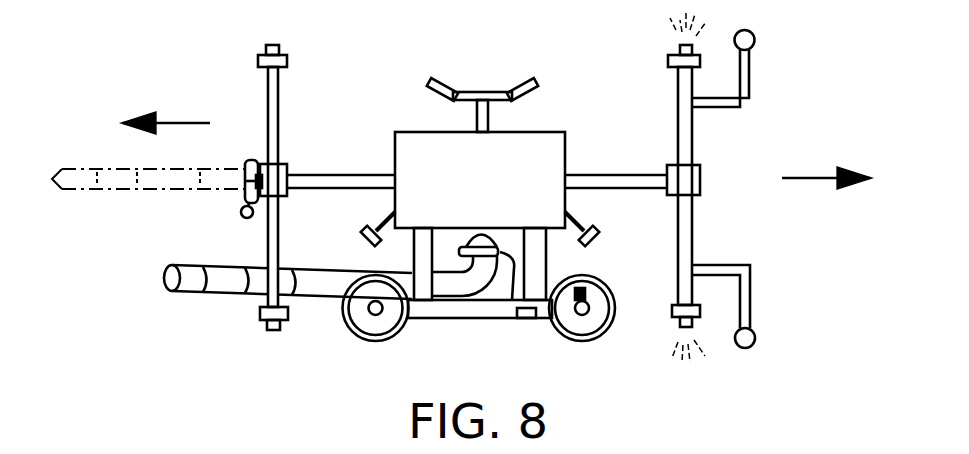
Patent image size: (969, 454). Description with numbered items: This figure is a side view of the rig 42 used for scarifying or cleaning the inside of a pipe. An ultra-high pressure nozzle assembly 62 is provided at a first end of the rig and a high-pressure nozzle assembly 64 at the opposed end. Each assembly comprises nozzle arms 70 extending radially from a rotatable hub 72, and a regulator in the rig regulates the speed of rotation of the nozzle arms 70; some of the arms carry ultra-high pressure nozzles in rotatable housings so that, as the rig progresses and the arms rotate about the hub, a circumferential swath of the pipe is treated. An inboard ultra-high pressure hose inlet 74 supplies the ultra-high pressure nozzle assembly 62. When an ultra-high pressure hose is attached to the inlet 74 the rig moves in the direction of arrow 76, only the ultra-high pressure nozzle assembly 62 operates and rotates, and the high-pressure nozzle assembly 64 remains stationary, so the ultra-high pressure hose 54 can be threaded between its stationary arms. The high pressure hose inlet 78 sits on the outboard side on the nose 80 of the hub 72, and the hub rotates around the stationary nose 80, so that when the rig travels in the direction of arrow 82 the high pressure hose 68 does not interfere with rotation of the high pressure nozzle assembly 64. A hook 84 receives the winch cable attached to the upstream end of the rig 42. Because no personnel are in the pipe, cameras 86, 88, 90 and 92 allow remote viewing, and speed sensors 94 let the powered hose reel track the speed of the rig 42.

The rig 42 is at (447, 308).
The ultra-high pressure hose 54 is at (218, 283).
The ultra-high pressure nozzle assembly 62 is at (693, 115).
The high-pressure nozzle assembly 64 is at (267, 90).
The high pressure hose 68 is at (138, 185).
The nozzle arms 70 is at (276, 120).
The rotatable hub 72 is at (283, 177).
The inboard ultra-high pressure hose inlet 74 is at (512, 255).
The arrow 76 is at (810, 178).
The high pressure hose inlet 78 is at (250, 160).
The nose 80 is at (245, 181).
The arrow 82 is at (173, 123).
The hook 84 is at (244, 218).
The camera 86 is at (440, 78).
The camera 88 is at (517, 78).
The camera 90 is at (582, 213).
The camera 92 is at (383, 213).
The speed sensors 94 is at (527, 318).